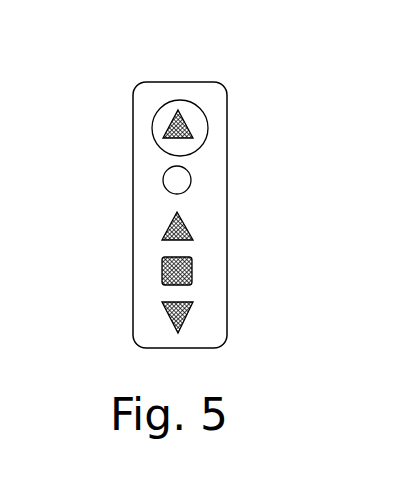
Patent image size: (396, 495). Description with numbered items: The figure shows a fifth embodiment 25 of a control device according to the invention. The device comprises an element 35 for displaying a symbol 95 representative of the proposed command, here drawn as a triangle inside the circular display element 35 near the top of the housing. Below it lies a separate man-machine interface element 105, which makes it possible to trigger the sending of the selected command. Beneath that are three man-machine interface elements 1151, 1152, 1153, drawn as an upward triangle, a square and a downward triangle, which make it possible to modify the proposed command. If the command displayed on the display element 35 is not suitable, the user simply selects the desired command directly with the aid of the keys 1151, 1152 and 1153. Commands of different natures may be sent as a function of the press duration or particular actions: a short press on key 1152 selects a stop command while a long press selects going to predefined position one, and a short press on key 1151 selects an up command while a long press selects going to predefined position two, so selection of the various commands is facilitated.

The fifth embodiment 25 is at (181, 79).
The element for displaying a symbol 35 is at (154, 109).
The symbol 95 is at (193, 118).
The separate man-machine interface element 105 is at (162, 176).
The man-machine interface element 1151 is at (164, 227).
The man-machine interface element 1152 is at (161, 272).
The man-machine interface element 1153 is at (162, 314).